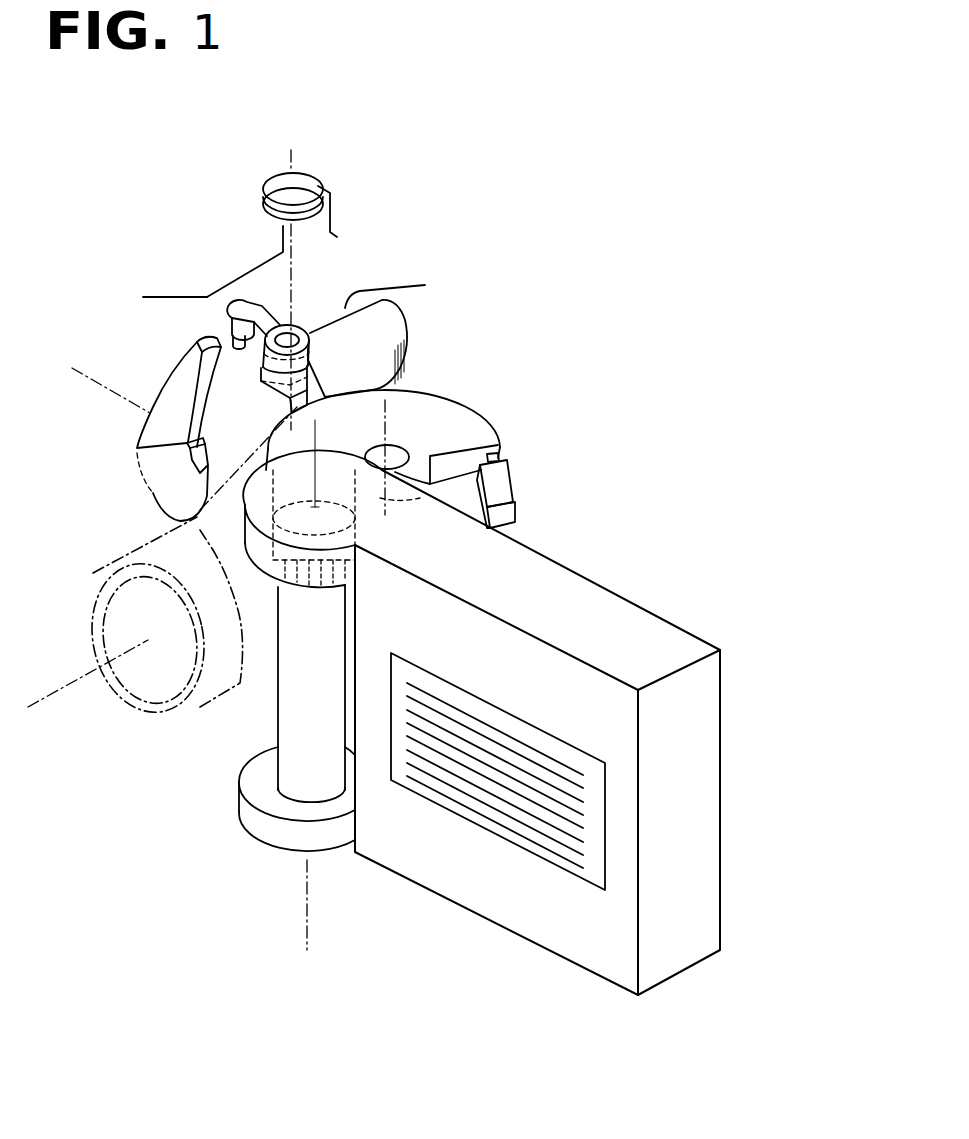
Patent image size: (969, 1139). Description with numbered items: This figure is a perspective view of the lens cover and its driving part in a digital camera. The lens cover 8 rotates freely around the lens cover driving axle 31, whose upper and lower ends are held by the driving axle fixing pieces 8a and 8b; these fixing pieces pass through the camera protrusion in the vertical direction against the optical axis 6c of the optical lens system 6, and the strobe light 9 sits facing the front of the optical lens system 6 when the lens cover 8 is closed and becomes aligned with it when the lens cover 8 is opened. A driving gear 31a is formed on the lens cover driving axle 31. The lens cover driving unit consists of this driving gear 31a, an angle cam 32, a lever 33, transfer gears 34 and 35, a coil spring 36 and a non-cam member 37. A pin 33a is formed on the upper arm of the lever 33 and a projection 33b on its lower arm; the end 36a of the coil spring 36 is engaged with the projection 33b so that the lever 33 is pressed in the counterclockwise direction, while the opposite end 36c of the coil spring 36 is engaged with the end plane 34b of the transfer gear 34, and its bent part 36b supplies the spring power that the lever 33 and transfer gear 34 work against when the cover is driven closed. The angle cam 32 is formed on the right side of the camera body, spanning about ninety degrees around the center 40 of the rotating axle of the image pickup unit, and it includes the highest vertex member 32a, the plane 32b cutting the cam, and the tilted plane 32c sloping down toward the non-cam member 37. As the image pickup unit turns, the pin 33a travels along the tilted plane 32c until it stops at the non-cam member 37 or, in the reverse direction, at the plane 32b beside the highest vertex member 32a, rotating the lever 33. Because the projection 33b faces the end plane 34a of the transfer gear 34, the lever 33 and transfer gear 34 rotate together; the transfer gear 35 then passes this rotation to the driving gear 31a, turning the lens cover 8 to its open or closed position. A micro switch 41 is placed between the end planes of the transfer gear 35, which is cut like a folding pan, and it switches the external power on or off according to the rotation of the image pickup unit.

The optical lens system 6 is at (156, 682).
The optical axis 6c is at (40, 705).
The lens cover 8 is at (570, 572).
The driving axle fixing piece 8a is at (325, 493).
The driving axle fixing piece 8b is at (270, 843).
The strobe light 9 is at (505, 708).
The lens cover driving axle 31 is at (337, 665).
The driving gear 31a is at (318, 583).
The angle cam 32 is at (143, 420).
The highest vertex member 32a is at (155, 499).
The plane 32b is at (187, 446).
The tilted plane 32c is at (197, 353).
The lever 33 is at (265, 313).
The pin 33a is at (231, 330).
The projection 33b is at (297, 399).
The transfer gear 34 is at (409, 348).
The end plane 34a is at (322, 397).
The end plane 34b is at (405, 296).
The transfer gear 35 is at (490, 425).
The coil spring 36 is at (308, 172).
The end of coil spring 36a is at (243, 273).
The bent part 36b is at (143, 297).
The opposite end of coil spring 36c is at (333, 214).
The non-cam member 37 is at (143, 488).
The center of rotating axle 40 is at (72, 368).
The micro switch 41 is at (518, 482).